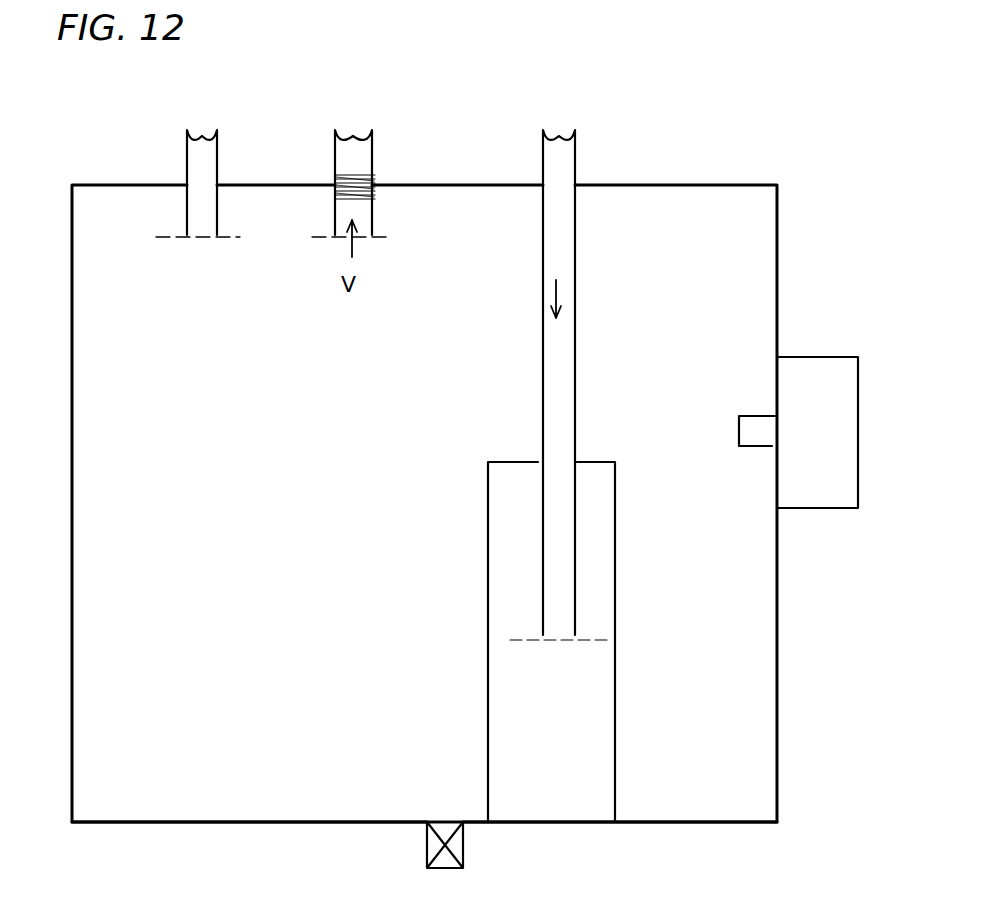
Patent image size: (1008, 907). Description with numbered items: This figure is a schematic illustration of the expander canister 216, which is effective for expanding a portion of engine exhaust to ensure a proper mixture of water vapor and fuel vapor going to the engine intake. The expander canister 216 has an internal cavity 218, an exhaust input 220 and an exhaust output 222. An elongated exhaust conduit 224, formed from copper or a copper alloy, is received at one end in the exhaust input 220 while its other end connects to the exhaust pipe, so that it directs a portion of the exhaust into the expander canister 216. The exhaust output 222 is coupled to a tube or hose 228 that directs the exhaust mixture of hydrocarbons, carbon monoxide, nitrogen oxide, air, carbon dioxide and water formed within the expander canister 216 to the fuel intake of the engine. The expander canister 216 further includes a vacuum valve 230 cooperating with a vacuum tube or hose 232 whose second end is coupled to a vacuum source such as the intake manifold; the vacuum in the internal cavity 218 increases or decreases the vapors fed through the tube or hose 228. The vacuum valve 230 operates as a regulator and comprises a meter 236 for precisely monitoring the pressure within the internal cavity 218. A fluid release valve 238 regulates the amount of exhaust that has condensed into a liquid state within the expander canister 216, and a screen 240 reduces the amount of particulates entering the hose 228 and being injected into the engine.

The expander canister 216 is at (656, 167).
The internal cavity 218 is at (222, 783).
The exhaust input 220 is at (572, 112).
The exhaust output 222 is at (372, 212).
The elongated exhaust conduit 224 is at (562, 247).
The tube or hose 228 is at (360, 161).
The vacuum valve 230 is at (806, 520).
The vacuum tube or hose 232 is at (198, 159).
The meter 236 is at (795, 370).
The fluid release valve 238 is at (478, 853).
The screen 240 is at (615, 672).